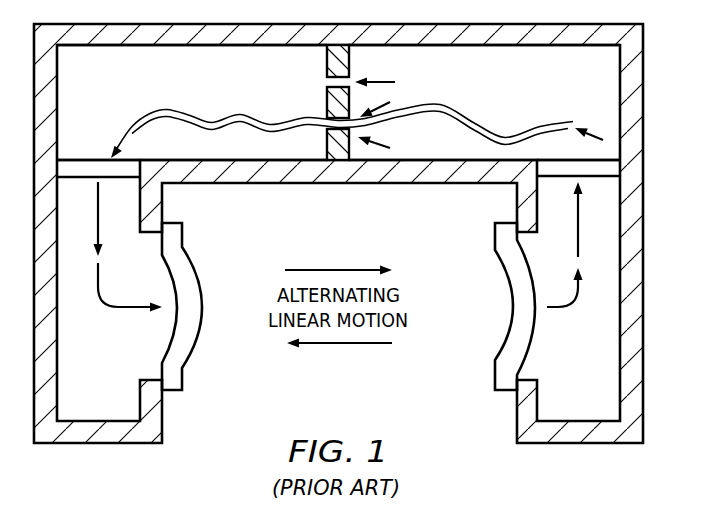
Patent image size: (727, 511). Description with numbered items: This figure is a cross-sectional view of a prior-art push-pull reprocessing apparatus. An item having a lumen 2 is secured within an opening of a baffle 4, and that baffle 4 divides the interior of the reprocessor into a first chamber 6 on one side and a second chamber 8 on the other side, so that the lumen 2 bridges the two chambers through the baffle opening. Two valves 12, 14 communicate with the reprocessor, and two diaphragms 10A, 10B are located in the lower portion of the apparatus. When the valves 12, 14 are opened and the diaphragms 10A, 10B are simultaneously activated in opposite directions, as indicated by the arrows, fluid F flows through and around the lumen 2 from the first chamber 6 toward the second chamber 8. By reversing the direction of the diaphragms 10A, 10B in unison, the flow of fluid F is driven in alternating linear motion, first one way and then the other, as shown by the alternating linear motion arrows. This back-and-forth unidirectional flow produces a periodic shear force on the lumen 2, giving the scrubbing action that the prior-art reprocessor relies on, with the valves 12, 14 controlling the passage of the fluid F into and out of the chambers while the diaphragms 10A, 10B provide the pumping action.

The lumen 2 is at (152, 112).
The baffle 4 is at (327, 99).
The first chamber 6 is at (208, 86).
The second chamber 8 is at (481, 85).
The diaphragm 10A is at (183, 372).
The diaphragm 10B is at (495, 372).
The valve 12 is at (88, 159).
The valve 14 is at (592, 178).
The fluid F is at (596, 140).